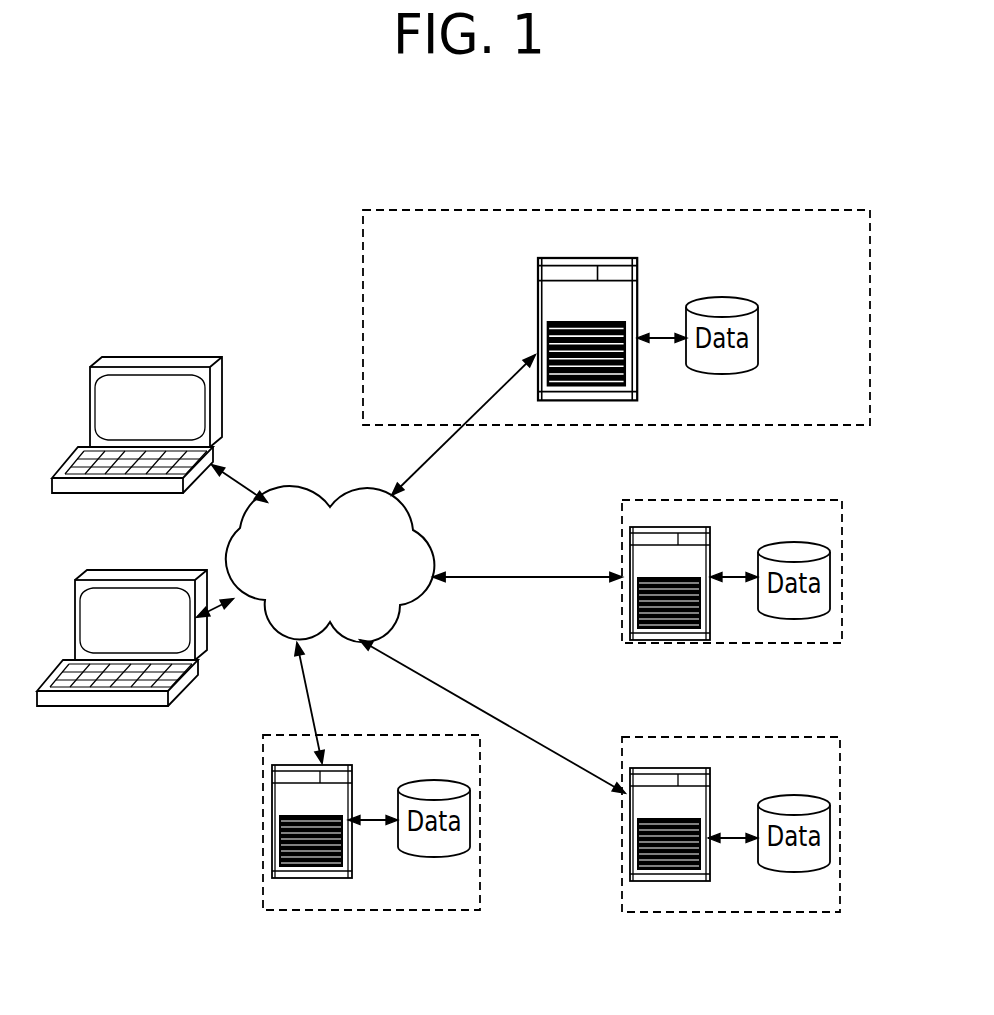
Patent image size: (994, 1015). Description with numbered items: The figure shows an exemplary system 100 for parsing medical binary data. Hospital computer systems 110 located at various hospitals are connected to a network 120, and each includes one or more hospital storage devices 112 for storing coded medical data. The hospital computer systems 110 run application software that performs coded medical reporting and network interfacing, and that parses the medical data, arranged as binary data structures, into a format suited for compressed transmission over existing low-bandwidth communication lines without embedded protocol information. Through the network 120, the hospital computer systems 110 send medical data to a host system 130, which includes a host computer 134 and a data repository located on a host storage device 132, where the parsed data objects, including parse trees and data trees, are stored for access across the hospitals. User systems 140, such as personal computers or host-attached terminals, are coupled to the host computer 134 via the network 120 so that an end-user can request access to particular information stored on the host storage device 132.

The system 100 is at (258, 262).
The hospital computer system 110 is at (842, 603).
The hospital storage device 112 is at (790, 545).
The network 120 is at (430, 537).
The host system 130 is at (735, 210).
The host storage device 132 is at (758, 338).
The host computer 134 is at (538, 302).
The user system 140 is at (135, 363).